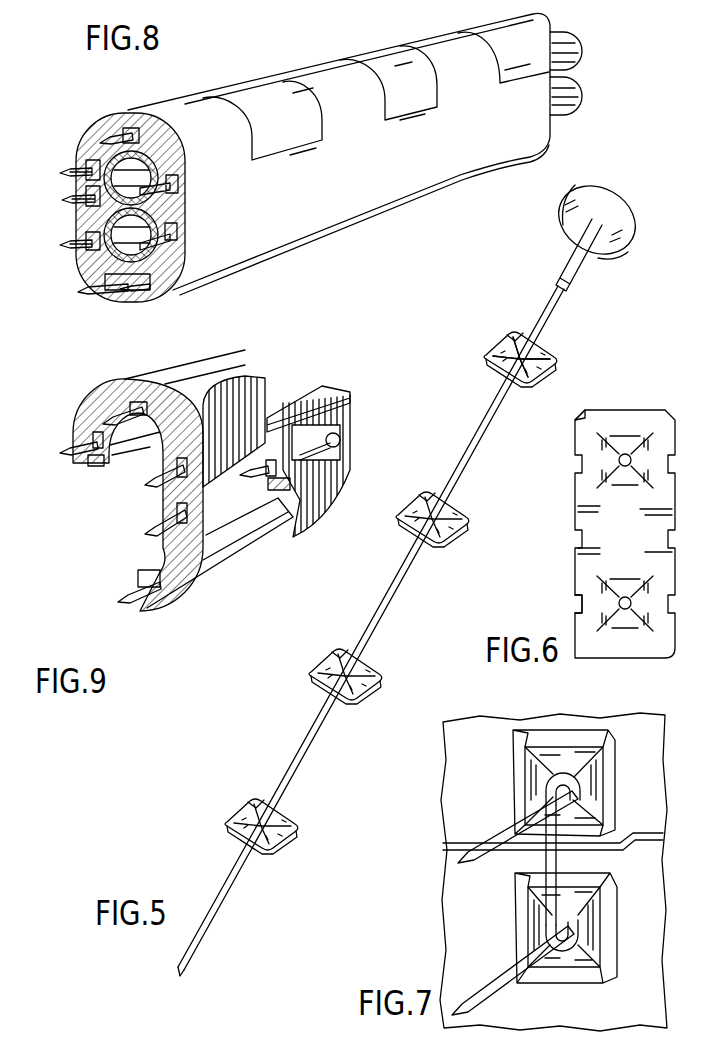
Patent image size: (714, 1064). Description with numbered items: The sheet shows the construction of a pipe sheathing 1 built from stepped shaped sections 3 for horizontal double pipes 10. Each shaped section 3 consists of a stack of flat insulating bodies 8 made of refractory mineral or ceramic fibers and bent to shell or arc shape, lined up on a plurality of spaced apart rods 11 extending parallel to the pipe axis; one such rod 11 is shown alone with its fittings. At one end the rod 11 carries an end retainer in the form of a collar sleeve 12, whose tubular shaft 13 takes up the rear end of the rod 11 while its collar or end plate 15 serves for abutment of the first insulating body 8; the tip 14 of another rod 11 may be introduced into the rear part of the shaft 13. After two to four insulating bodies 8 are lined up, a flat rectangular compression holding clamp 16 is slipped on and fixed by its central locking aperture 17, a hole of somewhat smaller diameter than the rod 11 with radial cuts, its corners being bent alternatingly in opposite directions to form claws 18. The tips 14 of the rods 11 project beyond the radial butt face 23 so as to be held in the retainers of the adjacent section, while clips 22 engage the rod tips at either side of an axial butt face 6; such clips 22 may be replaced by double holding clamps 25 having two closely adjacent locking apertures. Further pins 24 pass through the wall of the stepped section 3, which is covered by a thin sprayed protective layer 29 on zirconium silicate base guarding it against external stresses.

In FIG. 8, the pipe sheathing 1 is at (333, 58).
In FIG. 8, the stepped shaped section 3 is at (250, 96).
In FIG. 9, the stepped shaped section 3 is at (230, 362).
In FIG. 9, the axial butt face 6 is at (350, 383).
In FIG. 7, the axial butt face 6 is at (450, 843).
In FIG. 9, the insulating body 8 is at (267, 388).
In FIG. 8, the pipe 10 is at (90, 132).
In FIG. 8, the rod 11 is at (72, 168).
In FIG. 9, the rod 11 is at (70, 458).
In FIG. 5, the rod 11 is at (390, 597).
In FIG. 9, the collar sleeve 12 is at (345, 438).
In FIG. 5, the collar sleeve 12 is at (620, 265).
In FIG. 5, the shaft 13 is at (578, 248).
In FIG. 5, the tip 14 is at (182, 968).
In FIG. 5, the end plate 15 is at (622, 200).
In FIG. 9, the compression holding clamp 16 is at (103, 465).
In FIG. 5, the compression holding clamp 16 is at (357, 695).
In FIG. 7, the compression holding clamp 16 is at (520, 783).
In FIG. 5, the locking aperture 17 is at (503, 373).
In FIG. 6, the locking aperture 17 is at (620, 464).
In FIG. 5, the claw 18 is at (515, 336).
In FIG. 6, the claw 18 is at (582, 410).
In FIG. 8, the clip 22 is at (88, 192).
In FIG. 7, the clip 22 is at (530, 862).
In FIG. 9, the radial butt face 23 is at (157, 553).
In FIG. 9, the pin 24 is at (132, 603).
In FIG. 6, the double holding clamp 25 is at (574, 597).
In FIG. 9, the protective layer 29 is at (222, 565).